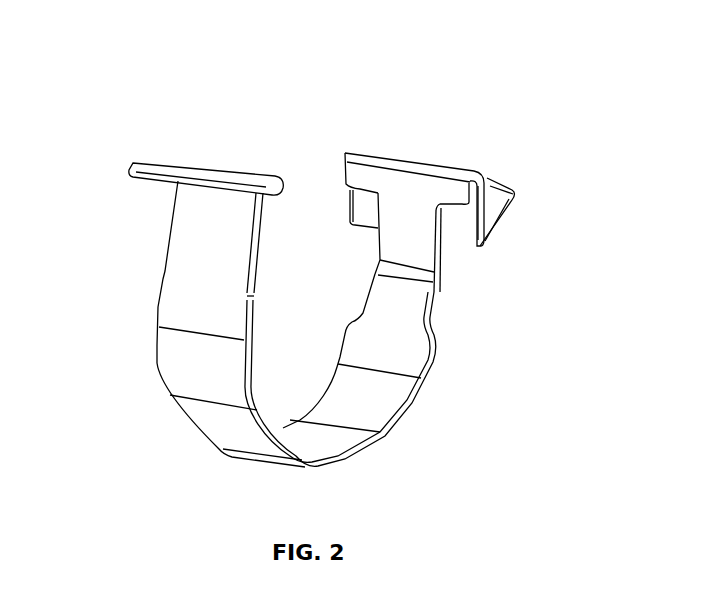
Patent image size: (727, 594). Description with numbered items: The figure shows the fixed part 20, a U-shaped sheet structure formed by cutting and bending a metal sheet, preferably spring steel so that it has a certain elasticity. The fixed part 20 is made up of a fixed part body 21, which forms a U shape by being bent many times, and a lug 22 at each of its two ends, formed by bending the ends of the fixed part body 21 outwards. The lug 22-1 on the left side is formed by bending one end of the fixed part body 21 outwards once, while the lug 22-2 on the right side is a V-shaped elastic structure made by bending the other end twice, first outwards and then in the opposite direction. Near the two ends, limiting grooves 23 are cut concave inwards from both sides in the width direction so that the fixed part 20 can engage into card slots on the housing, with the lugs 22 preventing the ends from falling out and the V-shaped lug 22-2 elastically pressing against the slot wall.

The fixed part 20 is at (129, 436).
The fixed part body 21 is at (337, 427).
The lug 22 is at (305, 37).
The lug 22-1 is at (113, 204).
The lug 22-2 is at (550, 168).
The limiting groove 23 is at (247, 245).